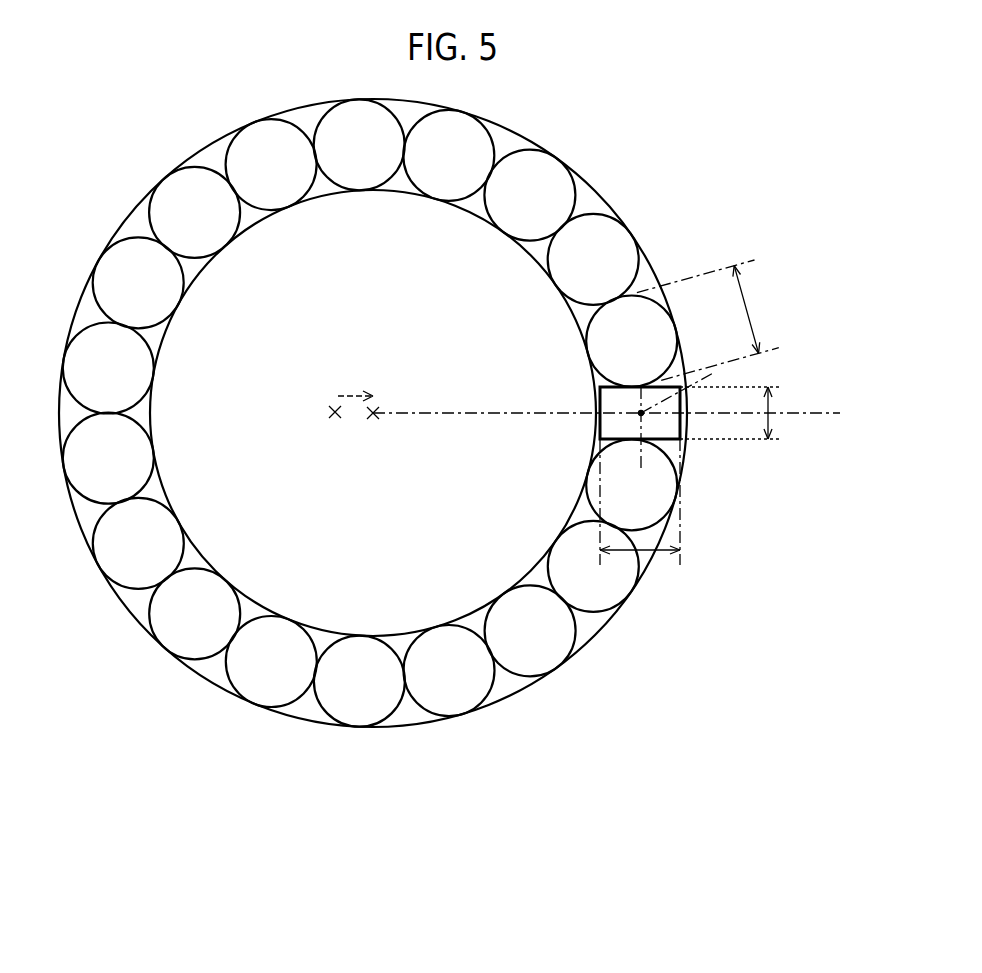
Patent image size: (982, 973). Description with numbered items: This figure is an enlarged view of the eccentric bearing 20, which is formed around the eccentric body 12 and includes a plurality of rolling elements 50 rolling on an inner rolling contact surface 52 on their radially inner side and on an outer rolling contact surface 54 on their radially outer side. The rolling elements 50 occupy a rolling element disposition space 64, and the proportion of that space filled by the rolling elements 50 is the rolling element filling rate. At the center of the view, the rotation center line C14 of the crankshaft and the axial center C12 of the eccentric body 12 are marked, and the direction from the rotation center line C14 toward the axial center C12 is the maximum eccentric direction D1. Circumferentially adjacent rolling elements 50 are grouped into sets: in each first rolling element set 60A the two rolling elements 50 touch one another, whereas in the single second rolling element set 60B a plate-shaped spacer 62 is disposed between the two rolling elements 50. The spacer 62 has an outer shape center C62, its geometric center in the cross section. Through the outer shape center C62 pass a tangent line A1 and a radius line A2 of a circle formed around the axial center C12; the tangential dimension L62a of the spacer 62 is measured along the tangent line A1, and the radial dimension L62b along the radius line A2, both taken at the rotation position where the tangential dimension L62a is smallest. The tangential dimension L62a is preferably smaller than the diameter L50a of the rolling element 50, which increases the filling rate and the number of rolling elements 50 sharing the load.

The eccentric body 12 is at (425, 597).
The eccentric bearing 20 is at (470, 725).
The rolling element 50 is at (598, 340).
The inner rolling contact surface 52 is at (505, 603).
The outer rolling contact surface 54 is at (560, 653).
The first rolling element set 60A is at (120, 567).
The second rolling element set 60B is at (598, 362).
The spacer 62 is at (668, 430).
The rolling element disposition space 64 is at (503, 677).
The axial center C12 is at (375, 415).
The rotation center line C14 is at (333, 414).
The outer shape center C62 is at (641, 416).
The maximum eccentric direction D1 is at (357, 392).
The tangent line A1 is at (694, 385).
The radius line A2 is at (827, 418).
The diameter of the rolling element L50a is at (747, 288).
The tangential dimension L62a is at (773, 403).
The radial dimension L62b is at (645, 553).